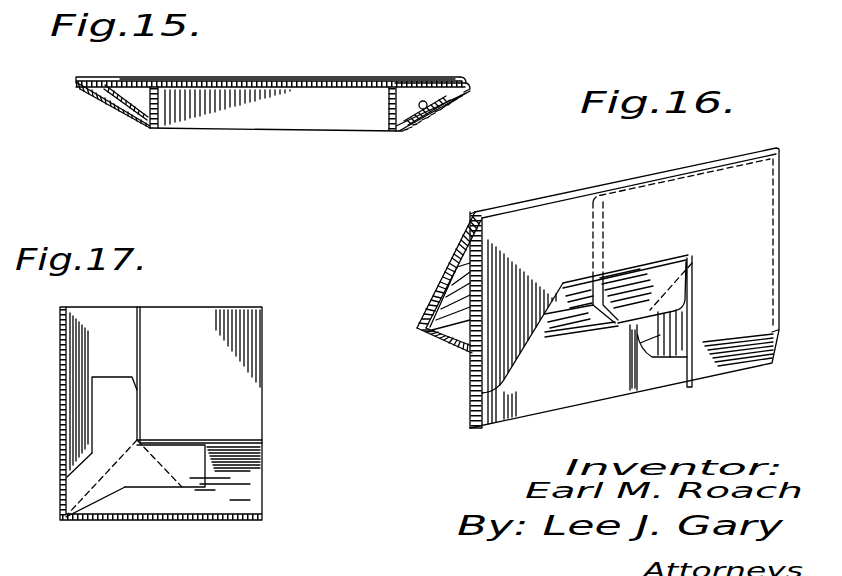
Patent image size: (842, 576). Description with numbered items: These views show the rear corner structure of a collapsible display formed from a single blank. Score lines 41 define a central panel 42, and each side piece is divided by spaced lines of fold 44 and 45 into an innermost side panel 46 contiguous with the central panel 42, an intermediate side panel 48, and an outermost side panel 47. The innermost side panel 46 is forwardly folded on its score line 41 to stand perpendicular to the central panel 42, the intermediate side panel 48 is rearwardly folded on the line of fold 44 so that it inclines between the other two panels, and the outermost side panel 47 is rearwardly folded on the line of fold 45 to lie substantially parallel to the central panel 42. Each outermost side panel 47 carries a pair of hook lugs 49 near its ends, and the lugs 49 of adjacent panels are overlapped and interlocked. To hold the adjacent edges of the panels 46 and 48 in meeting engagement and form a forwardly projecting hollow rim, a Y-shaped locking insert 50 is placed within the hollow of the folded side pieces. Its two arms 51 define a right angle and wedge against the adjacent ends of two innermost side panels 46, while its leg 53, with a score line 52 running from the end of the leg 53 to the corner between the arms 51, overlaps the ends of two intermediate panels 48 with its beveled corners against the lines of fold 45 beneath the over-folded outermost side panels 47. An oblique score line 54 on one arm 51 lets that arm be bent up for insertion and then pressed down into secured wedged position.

In FIG. 17, the score lines 41 is at (142, 340).
In FIG. 15, the central panel 42 is at (258, 82).
In FIG. 16, the central panel 42 is at (587, 392).
In FIG. 17, the central panel 42 is at (203, 323).
In FIG. 15, the line of fold 44 is at (396, 131).
In FIG. 15, the line of fold 45 is at (470, 86).
In FIG. 17, the line of fold 45 is at (190, 522).
In FIG. 15, the innermost side panel 46 is at (362, 118).
In FIG. 16, the innermost side panel 46 is at (443, 340).
In FIG. 15, the outermost side panel 47 is at (318, 77).
In FIG. 16, the outermost side panel 47 is at (493, 373).
In FIG. 15, the intermediate side panel 48 is at (138, 118).
In FIG. 16, the intermediate side panel 48 is at (455, 243).
In FIG. 17, the intermediate side panel 48 is at (98, 318).
In FIG. 15, the hook lugs 49 is at (142, 80).
In FIG. 16, the hook lugs 49 is at (623, 310).
In FIG. 15, the Y-shaped locking insert 50 is at (424, 116).
In FIG. 16, the arms 51 is at (430, 297).
In FIG. 17, the arms 51 is at (118, 395).
In FIG. 17, the score line 52 is at (118, 460).
In FIG. 17, the leg 53 is at (98, 497).
In FIG. 17, the score line 54 is at (160, 463).